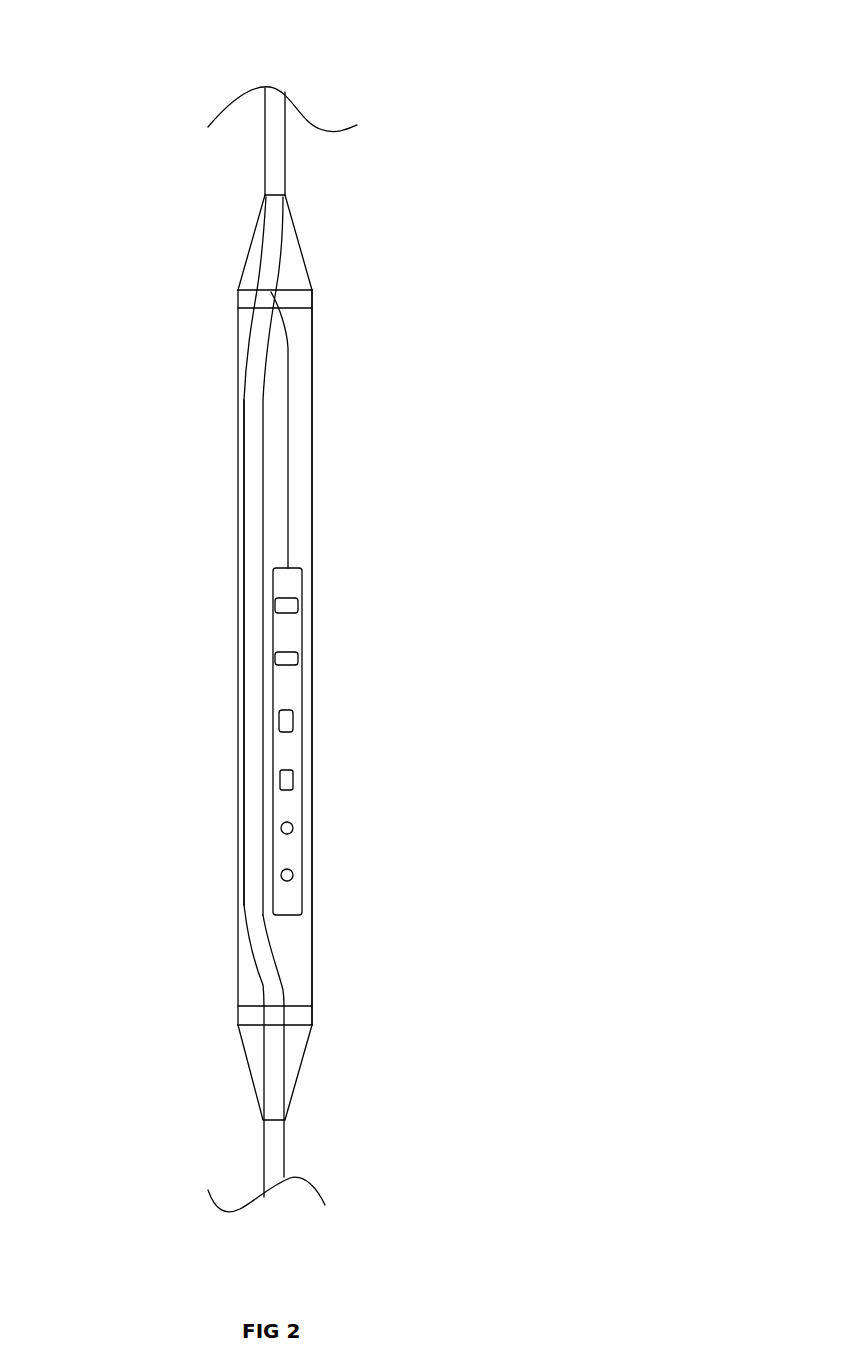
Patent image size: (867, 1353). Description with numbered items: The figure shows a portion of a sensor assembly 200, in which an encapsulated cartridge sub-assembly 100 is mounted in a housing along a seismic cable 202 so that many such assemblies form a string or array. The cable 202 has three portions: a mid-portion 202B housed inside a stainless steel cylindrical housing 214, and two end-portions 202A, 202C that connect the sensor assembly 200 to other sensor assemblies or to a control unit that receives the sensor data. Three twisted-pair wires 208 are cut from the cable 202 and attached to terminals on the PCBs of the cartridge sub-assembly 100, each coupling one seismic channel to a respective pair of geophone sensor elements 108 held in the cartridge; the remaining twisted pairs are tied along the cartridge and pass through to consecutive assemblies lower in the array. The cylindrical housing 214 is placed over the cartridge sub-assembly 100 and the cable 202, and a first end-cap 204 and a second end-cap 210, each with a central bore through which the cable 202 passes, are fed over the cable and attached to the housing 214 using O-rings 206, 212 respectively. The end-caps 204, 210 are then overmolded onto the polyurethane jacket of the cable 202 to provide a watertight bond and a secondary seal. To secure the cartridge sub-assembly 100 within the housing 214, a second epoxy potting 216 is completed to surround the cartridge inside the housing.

The sensor assembly 200 is at (152, 45).
The seismic cable 202 is at (273, 185).
The end-portion of the cable 202A is at (273, 133).
The mid-portion of the cable 202B is at (252, 663).
The end-portion of the cable 202C is at (272, 1147).
The first end-cap 204 is at (302, 265).
The O-ring 206 is at (305, 300).
The stainless steel cylindrical housing 214 is at (314, 420).
The twisted-pair wires 208 is at (291, 507).
The cartridge sub-assembly 100 is at (286, 583).
The geophone sensor elements 108 is at (295, 727).
The second epoxy potting 216 is at (291, 938).
The O-ring 212 is at (302, 1017).
The second end-cap 210 is at (300, 1050).